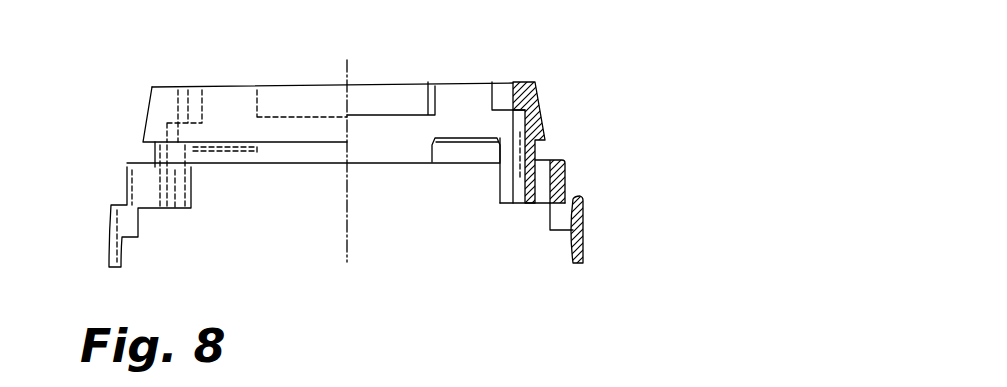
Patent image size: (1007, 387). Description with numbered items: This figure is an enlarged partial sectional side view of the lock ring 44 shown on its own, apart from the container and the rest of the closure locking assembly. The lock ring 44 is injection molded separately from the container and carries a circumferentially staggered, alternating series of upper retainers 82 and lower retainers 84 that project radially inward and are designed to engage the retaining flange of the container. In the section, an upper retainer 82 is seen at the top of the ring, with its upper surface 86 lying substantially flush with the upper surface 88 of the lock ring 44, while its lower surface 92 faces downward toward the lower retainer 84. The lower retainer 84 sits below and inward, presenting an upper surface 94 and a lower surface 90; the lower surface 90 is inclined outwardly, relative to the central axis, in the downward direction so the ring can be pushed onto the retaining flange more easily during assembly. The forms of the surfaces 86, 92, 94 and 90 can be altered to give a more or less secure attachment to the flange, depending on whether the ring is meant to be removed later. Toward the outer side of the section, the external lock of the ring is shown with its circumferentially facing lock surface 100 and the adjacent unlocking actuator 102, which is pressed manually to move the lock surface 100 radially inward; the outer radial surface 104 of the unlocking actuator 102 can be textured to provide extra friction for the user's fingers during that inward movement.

The lock ring 44 is at (588, 105).
The upper retainer 82 is at (381, 97).
The lower retainer 84 is at (430, 159).
The upper surface of the upper retainer 86 is at (377, 78).
The upper surface of the lock ring 88 is at (162, 85).
The lower surface of the lower retainer 90 is at (483, 162).
The lower surface of the upper retainer 92 is at (373, 120).
The upper surface of the lower retainer 94 is at (465, 130).
The lock surface 100 is at (565, 177).
The unlocking actuator 102 is at (580, 268).
The outer radial surface 104 is at (592, 228).